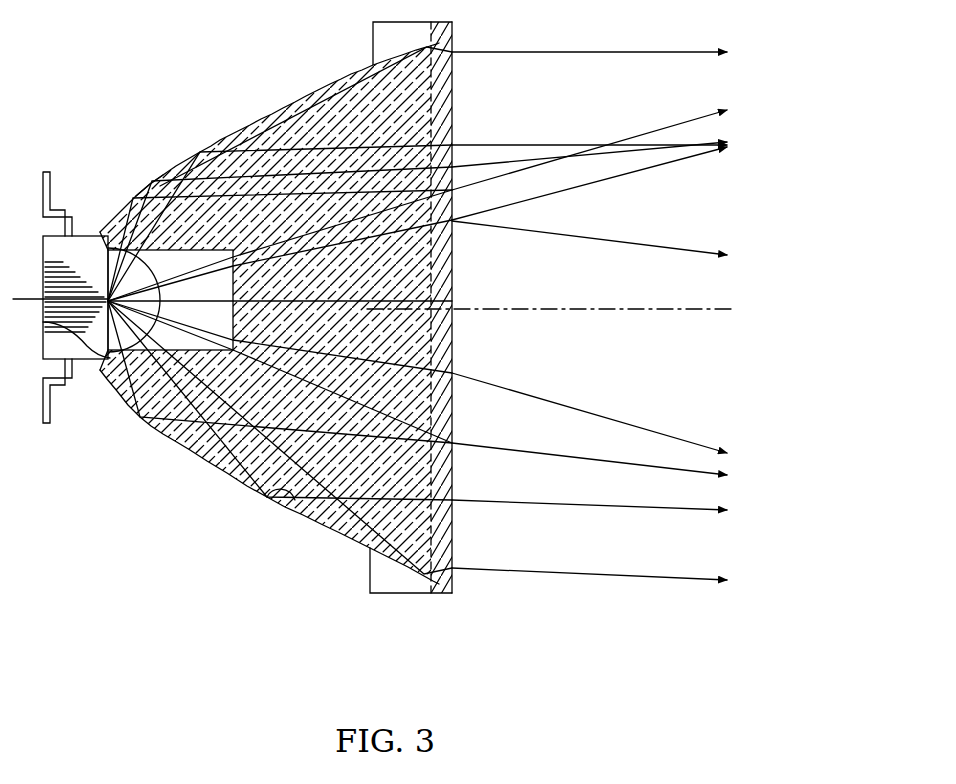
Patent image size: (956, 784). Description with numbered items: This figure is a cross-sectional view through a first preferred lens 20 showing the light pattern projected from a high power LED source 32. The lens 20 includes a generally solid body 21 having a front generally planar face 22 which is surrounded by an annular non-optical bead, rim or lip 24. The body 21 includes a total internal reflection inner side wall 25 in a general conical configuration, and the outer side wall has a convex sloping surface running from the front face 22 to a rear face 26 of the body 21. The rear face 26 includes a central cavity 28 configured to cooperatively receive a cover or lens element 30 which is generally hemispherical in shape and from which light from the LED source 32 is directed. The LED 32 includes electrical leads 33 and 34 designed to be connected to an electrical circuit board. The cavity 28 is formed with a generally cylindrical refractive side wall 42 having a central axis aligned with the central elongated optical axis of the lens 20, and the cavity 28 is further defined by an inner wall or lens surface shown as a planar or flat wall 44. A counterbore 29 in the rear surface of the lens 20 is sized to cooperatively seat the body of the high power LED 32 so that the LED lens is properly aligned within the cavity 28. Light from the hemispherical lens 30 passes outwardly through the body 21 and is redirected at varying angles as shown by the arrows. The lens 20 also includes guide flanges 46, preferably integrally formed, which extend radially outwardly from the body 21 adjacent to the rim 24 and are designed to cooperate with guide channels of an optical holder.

The lens 20 is at (371, 331).
The generally solid body 21 is at (237, 130).
The front generally planar face 22 is at (452, 118).
The annular non-optical bead, rim or lip 24 is at (440, 595).
The total internal reflection inner side wall 25 is at (266, 497).
The rear face 26 is at (100, 228).
The central cavity 28 is at (103, 374).
The counterbore 29 is at (53, 322).
The cover or lens element 30 is at (172, 306).
The LED source 32 is at (53, 350).
The electrical lead 33 is at (47, 172).
The electrical lead 34 is at (50, 420).
The generally cylindrical refractive side wall 42 is at (150, 192).
The planar or flat wall 44 is at (233, 279).
The guide flange 46 is at (373, 42).